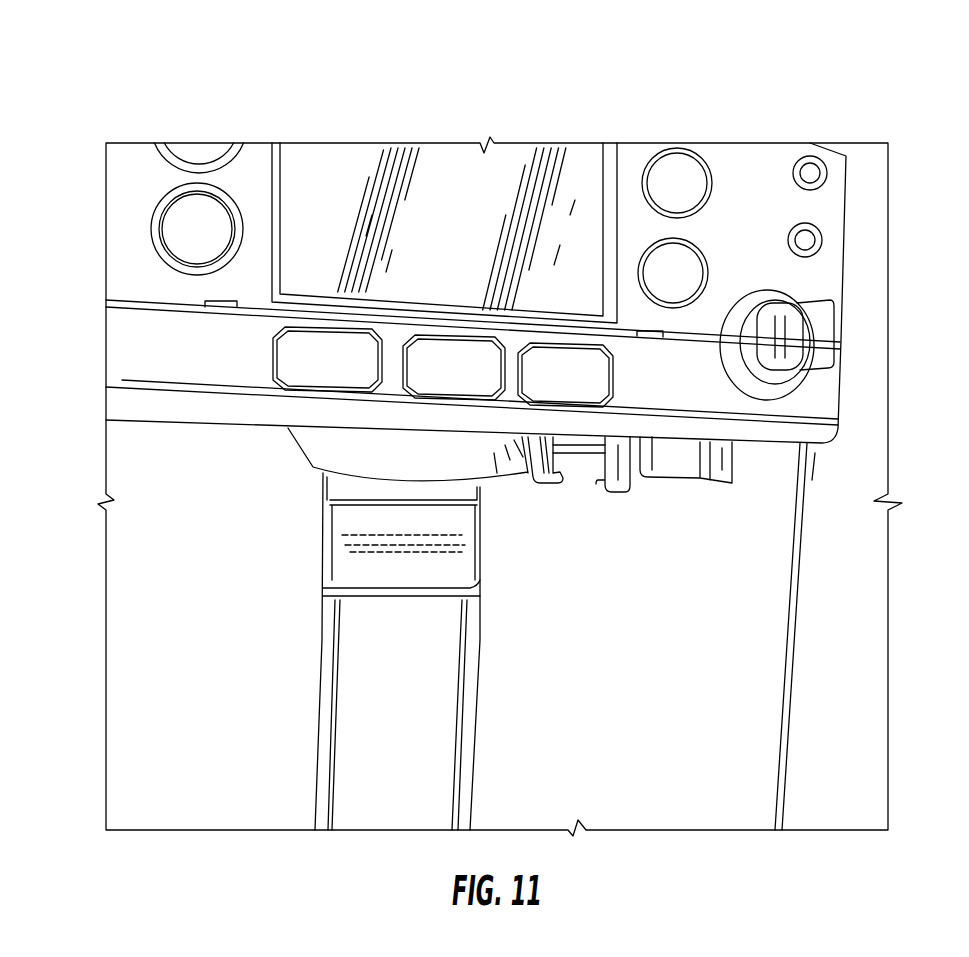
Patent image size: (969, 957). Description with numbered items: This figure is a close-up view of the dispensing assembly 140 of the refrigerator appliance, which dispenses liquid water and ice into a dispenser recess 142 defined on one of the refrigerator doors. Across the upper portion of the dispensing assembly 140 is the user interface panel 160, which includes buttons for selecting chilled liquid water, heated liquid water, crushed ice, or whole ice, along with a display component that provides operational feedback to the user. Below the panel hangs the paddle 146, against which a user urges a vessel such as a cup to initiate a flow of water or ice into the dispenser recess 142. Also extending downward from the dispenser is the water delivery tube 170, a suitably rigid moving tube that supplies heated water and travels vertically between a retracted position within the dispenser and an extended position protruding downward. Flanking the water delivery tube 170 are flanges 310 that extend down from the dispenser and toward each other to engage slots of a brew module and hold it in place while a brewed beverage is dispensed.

The dispensing assembly 140 is at (145, 109).
The dispenser recess 142 is at (151, 681).
The paddle 146 is at (353, 790).
The user interface panel 160 is at (330, 181).
The water delivery tube 170 is at (600, 482).
The flanges 310 is at (550, 477).